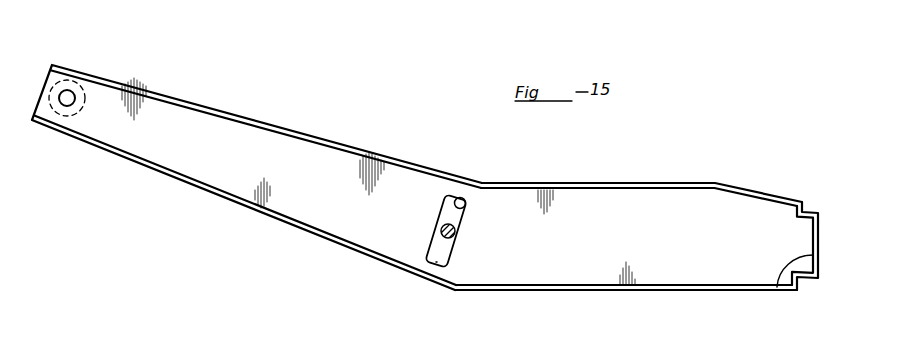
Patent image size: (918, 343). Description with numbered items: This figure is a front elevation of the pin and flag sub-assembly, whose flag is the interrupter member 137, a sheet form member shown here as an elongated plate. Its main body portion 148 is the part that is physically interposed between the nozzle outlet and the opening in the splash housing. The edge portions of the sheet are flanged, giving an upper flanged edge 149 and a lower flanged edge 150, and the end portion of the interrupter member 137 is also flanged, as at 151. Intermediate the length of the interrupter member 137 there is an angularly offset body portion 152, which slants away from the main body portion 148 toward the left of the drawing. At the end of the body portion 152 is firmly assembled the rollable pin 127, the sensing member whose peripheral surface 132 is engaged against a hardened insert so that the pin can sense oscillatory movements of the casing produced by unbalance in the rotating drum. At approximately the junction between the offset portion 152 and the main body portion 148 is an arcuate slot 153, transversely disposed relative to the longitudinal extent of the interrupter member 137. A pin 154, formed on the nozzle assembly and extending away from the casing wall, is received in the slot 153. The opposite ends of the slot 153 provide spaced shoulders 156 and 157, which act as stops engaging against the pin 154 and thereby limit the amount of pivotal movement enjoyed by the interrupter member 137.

The rollable pin 127 is at (76, 96).
The peripheral surface 132 is at (61, 90).
The interrupter member 137 is at (380, 141).
The body portion 148 is at (697, 275).
The upper flanged edge 149 is at (648, 185).
The lower flanged edge 150 is at (631, 289).
The flanged end portion 151 is at (777, 288).
The angularly offset body portion 152 is at (270, 143).
The arcuate slot 153 is at (459, 197).
The pin 154 is at (456, 229).
The shoulder 156 is at (453, 196).
The shoulder 157 is at (434, 262).